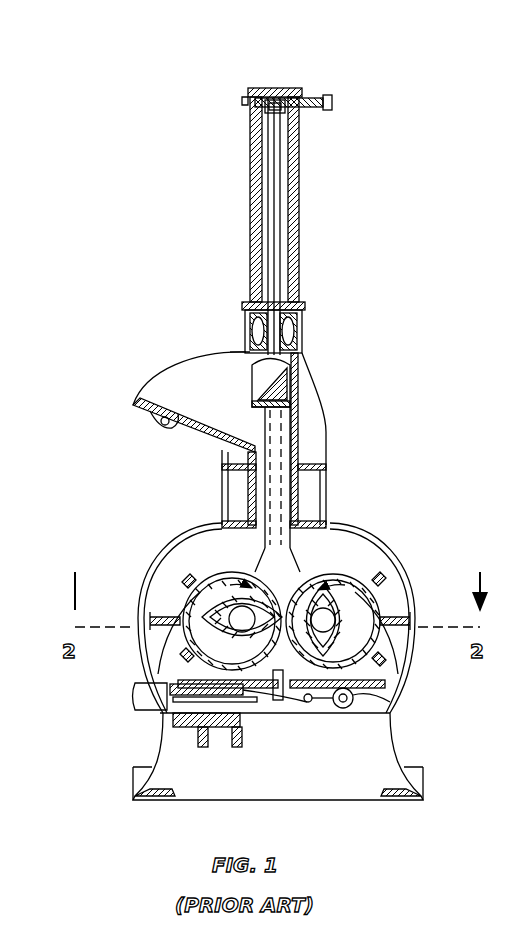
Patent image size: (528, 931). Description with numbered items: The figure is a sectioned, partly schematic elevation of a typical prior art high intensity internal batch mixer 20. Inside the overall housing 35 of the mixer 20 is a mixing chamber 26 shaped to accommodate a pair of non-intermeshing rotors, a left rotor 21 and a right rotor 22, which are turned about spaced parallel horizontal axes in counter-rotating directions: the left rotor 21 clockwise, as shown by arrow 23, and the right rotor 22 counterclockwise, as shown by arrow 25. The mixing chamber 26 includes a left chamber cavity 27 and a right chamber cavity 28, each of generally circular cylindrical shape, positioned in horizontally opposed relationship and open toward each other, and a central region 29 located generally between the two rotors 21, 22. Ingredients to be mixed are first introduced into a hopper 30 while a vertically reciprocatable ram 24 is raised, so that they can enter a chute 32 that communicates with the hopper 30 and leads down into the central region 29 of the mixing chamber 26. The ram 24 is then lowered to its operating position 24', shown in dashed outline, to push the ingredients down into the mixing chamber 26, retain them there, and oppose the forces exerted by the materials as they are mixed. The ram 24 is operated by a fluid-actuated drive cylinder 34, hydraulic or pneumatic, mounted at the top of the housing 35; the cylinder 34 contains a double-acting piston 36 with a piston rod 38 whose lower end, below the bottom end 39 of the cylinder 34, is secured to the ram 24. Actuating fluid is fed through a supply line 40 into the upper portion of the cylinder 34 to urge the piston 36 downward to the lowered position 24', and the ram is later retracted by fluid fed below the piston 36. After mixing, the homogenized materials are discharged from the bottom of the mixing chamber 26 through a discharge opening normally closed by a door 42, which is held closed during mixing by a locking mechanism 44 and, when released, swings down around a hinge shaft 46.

The mixer 20 is at (388, 378).
The left rotor 21 is at (204, 614).
The right rotor 22 is at (378, 660).
The arrow 23 is at (215, 552).
The ram 24 is at (310, 383).
The lowered operating position 24' is at (329, 440).
The arrow 25 is at (336, 548).
The mixing chamber 26 is at (186, 581).
The left chamber cavity 27 is at (186, 654).
The right chamber cavity 28 is at (372, 597).
The central region 29 is at (330, 562).
The hopper 30 is at (168, 380).
The chute 32 is at (282, 442).
The fluid-actuated drive cylinder 34 is at (300, 178).
The housing 35 is at (200, 528).
The double-acting piston 36 is at (300, 115).
The piston rod 38 is at (297, 224).
The bottom end 39 is at (305, 323).
The supply line 40 is at (314, 100).
The door 42 is at (288, 682).
The locking mechanism 44 is at (156, 720).
The hinge shaft 46 is at (362, 694).